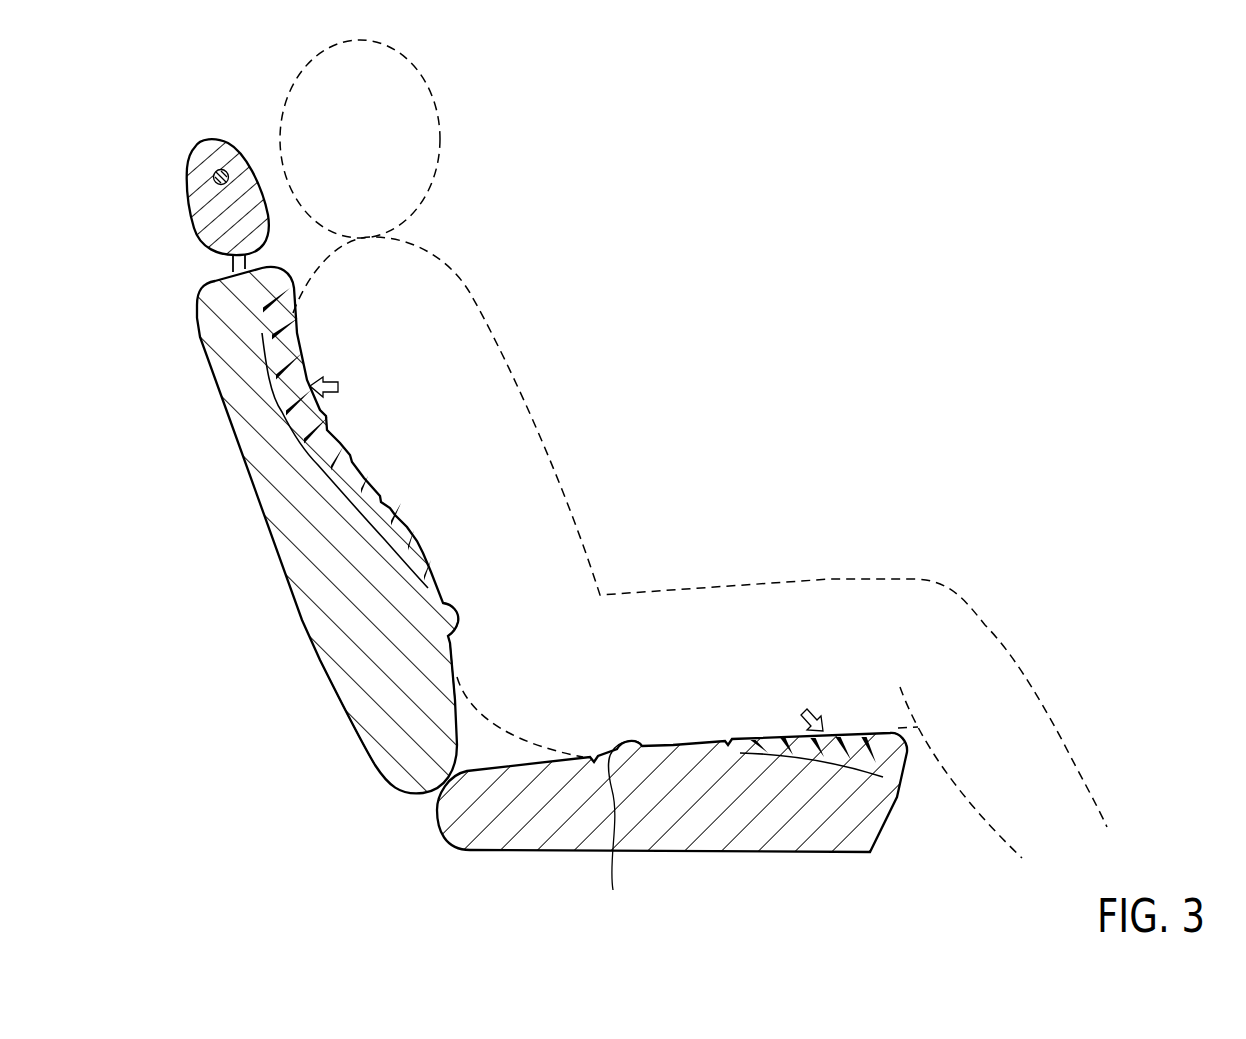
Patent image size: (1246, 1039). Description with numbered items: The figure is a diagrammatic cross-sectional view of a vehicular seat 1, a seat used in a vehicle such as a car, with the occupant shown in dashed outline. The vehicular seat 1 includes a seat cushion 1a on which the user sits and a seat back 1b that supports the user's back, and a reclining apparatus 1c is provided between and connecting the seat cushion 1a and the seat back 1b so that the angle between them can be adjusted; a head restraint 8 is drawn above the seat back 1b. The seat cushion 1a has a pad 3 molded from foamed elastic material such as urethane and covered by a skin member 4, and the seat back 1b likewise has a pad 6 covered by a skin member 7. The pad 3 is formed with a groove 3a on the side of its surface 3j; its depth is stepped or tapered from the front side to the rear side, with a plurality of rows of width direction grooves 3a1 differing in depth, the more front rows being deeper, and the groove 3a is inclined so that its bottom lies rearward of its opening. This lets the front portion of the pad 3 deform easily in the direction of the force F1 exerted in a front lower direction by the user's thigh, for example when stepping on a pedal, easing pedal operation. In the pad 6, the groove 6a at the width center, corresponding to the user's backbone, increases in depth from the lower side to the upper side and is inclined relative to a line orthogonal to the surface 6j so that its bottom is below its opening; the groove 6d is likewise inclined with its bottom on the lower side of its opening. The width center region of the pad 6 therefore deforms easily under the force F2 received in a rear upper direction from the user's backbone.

The vehicular seat 1 is at (173, 157).
The seat cushion 1a is at (670, 787).
The seat back 1b is at (307, 525).
The reclining apparatus 1c is at (423, 763).
The pad 3 is at (663, 813).
The groove 3a is at (878, 759).
The width direction groove 3a1 is at (763, 740).
The surface 3j is at (872, 730).
The skin member 4 is at (621, 830).
The pad 6 is at (333, 597).
The groove 6a is at (262, 372).
The groove 6d is at (265, 287).
The surface 6j is at (435, 588).
The skin member 7 is at (449, 641).
The head restraint 8 is at (180, 197).
The force F1 is at (808, 701).
The force F2 is at (345, 393).